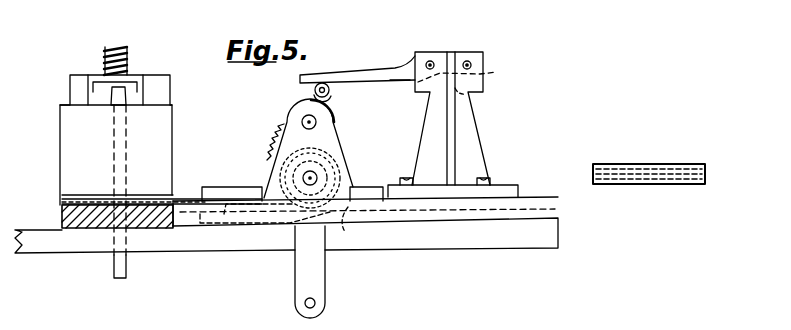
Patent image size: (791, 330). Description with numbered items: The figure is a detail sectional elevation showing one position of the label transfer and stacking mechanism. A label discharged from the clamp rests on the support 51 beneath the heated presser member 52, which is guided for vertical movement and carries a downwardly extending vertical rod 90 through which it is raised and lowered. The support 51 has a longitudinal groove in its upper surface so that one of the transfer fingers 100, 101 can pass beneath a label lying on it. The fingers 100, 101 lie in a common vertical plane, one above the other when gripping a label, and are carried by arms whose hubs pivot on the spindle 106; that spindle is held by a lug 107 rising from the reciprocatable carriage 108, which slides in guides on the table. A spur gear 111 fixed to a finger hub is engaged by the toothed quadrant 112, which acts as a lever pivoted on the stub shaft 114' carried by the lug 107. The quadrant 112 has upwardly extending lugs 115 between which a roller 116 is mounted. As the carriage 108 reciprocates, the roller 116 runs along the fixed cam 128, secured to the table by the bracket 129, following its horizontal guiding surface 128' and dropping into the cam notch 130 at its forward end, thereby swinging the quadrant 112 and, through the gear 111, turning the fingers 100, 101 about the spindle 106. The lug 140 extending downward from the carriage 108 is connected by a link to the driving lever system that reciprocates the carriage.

The support 51 is at (82, 232).
The presser member 52 is at (63, 150).
The vertical rod 90 is at (123, 268).
The transfer finger 100 is at (149, 197).
The transfer finger 101 is at (162, 232).
The spindle 106 is at (313, 176).
The lug 107 is at (338, 146).
The reciprocatable carriage 108 is at (363, 228).
The spur gear 111 is at (349, 177).
The toothed quadrant 112 is at (280, 125).
The stub shaft 114' is at (281, 100).
The lug 115 is at (329, 97).
The roller 116 is at (328, 84).
The fixed cam 128 is at (357, 58).
The horizontal guiding surface 128' is at (402, 98).
The bracket 129 is at (477, 119).
The cam notch 130 is at (476, 78).
The lug 140 is at (317, 276).